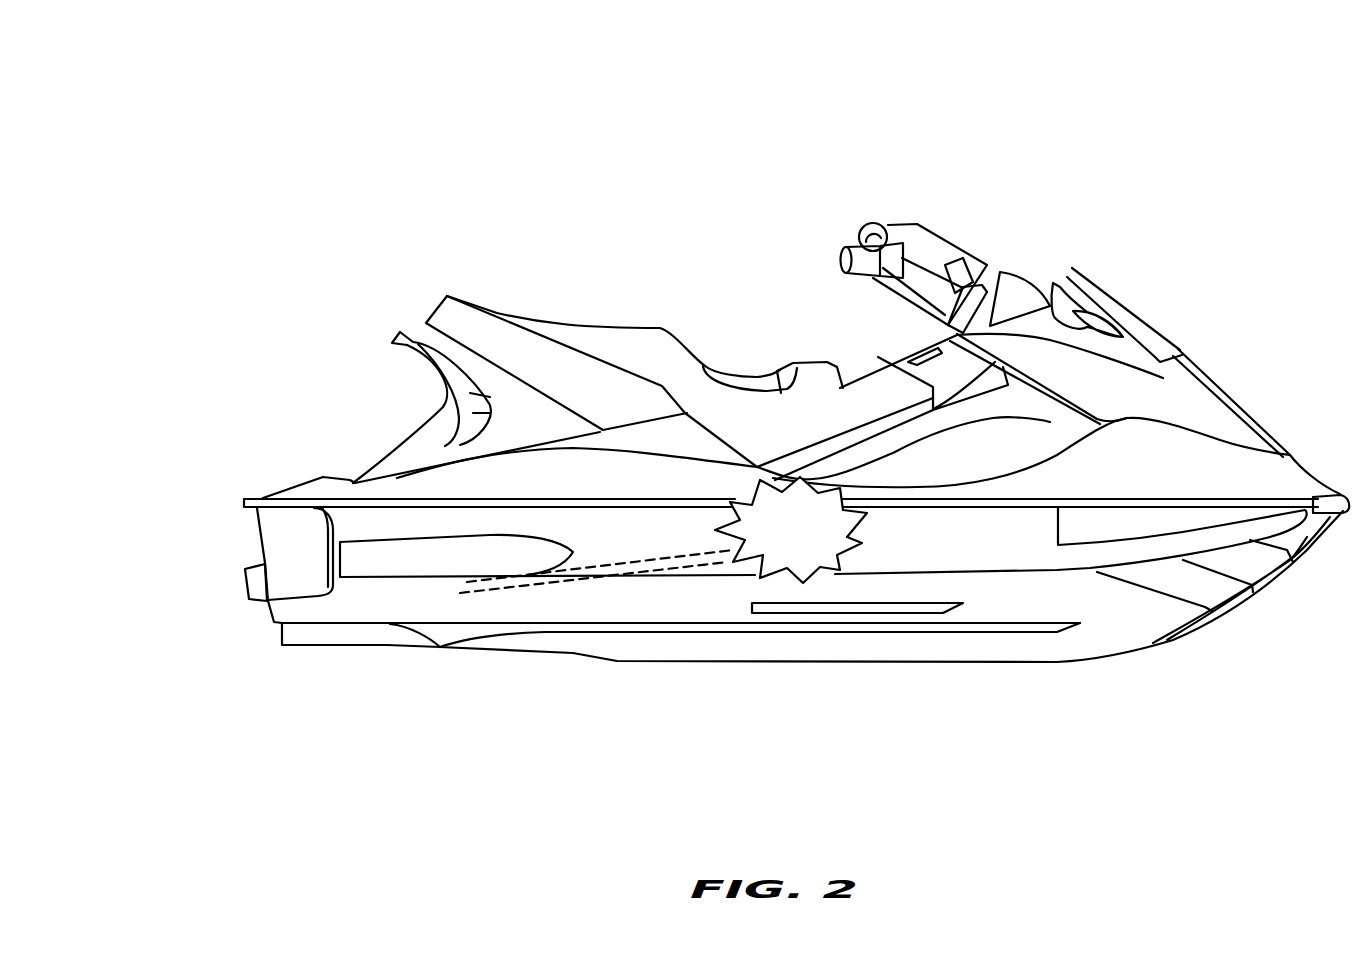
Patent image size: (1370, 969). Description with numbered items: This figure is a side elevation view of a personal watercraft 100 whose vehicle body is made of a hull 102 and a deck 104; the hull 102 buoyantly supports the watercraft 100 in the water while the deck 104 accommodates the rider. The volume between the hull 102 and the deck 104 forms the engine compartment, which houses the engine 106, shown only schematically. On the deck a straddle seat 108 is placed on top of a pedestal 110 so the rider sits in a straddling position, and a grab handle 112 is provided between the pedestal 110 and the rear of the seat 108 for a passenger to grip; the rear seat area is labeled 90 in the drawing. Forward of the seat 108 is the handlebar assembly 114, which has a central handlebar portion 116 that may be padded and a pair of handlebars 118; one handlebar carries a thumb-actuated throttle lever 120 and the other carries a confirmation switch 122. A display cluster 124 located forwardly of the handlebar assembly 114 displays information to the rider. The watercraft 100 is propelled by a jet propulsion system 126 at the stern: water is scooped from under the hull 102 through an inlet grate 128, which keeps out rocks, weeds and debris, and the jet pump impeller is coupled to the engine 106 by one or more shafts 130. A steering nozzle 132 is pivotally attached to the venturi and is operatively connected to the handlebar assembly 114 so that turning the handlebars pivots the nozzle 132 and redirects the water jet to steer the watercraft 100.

The seat 90 is at (567, 332).
The personal watercraft 100 is at (1153, 168).
The hull 102 is at (556, 712).
The deck 104 is at (1263, 375).
The engine 106 is at (817, 542).
The straddle seat 108 is at (778, 407).
The pedestal 110 is at (702, 452).
The grab handle 112 is at (440, 380).
The handlebar assembly 114 is at (944, 192).
The central handlebar portion 116 is at (899, 212).
The handlebars 118 is at (885, 230).
The thumb-actuated throttle lever 120 is at (860, 247).
The confirmation switch 122 is at (880, 243).
The display cluster 124 is at (1059, 273).
The jet propulsion system 126 is at (253, 606).
The inlet grate 128 is at (444, 647).
The shafts 130 is at (628, 572).
The steering nozzle 132 is at (245, 573).